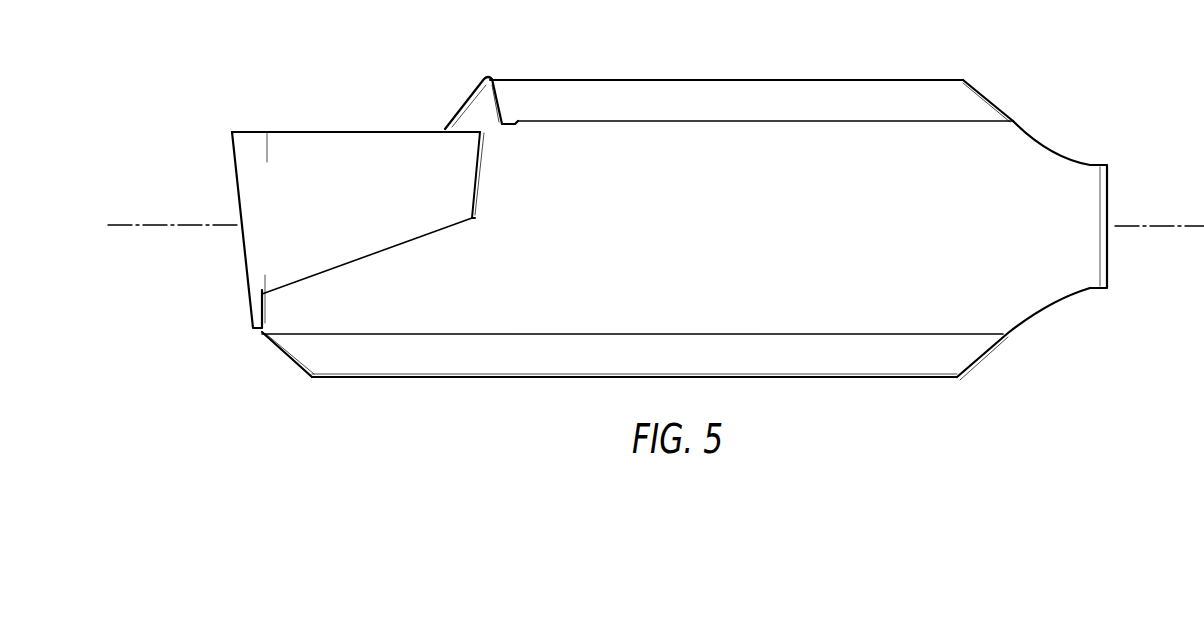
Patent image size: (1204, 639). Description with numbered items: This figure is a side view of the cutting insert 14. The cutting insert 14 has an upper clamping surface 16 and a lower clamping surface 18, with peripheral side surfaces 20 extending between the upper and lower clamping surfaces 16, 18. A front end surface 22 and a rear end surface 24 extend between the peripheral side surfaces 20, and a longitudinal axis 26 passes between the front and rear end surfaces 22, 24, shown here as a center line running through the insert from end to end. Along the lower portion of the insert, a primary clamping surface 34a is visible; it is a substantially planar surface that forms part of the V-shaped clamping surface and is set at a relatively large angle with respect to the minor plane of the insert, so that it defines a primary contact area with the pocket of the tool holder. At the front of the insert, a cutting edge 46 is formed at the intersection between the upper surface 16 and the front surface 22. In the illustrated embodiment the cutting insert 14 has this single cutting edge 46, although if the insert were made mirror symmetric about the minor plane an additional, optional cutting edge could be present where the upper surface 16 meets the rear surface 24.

The cutting insert 14 is at (952, 41).
The upper clamping surface 16 is at (838, 77).
The lower clamping surface 18 is at (410, 380).
The peripheral side surfaces 20 is at (957, 288).
The front end surface 22 is at (229, 176).
The rear end surface 24 is at (1112, 200).
The longitudinal axis 26 is at (147, 224).
The primary clamping surface 34a is at (342, 357).
The cutting edge 46 is at (230, 131).